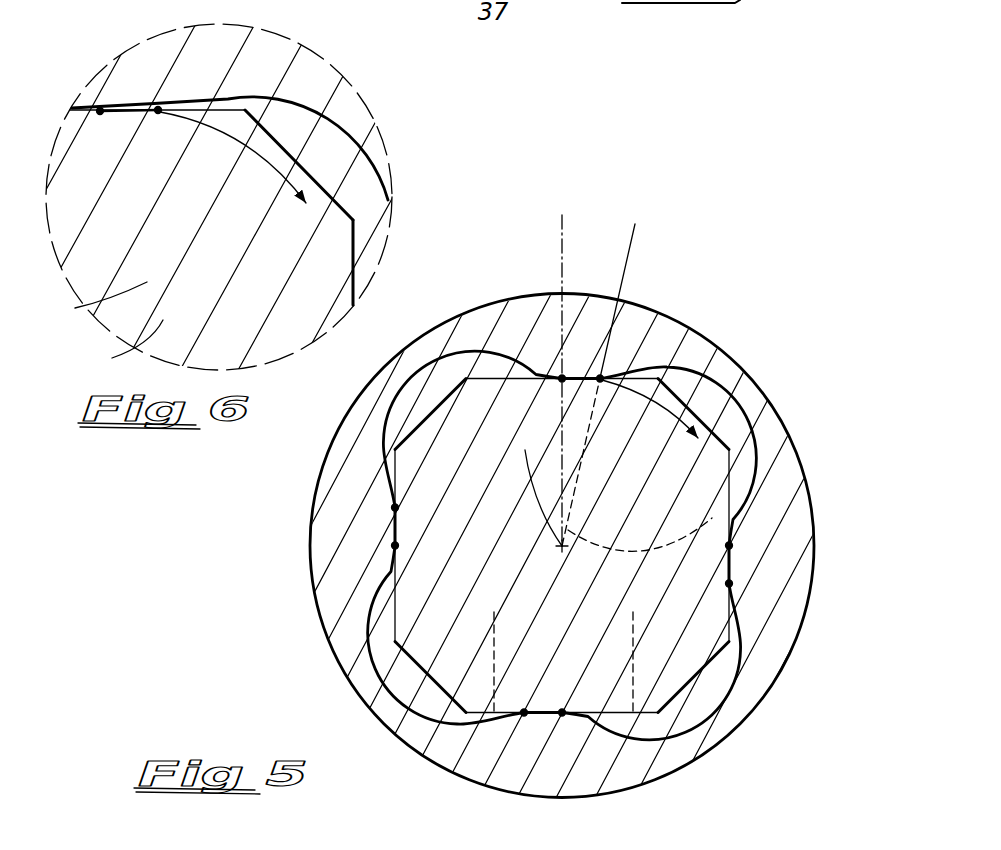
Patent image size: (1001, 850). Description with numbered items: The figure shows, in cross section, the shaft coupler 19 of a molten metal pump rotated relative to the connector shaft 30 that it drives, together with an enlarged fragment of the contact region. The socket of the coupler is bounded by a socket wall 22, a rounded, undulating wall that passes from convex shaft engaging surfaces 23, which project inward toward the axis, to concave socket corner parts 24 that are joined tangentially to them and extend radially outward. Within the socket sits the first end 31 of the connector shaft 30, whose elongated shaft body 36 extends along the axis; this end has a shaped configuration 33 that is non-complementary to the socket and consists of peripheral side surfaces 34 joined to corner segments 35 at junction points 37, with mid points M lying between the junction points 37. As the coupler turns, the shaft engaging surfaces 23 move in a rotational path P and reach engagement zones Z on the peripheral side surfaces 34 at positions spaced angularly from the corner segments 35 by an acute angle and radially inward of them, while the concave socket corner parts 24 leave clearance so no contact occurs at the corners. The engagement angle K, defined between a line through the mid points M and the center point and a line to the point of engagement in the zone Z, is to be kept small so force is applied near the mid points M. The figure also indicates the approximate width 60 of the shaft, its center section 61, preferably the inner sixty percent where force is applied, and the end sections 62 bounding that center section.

In FIG. 5, the shaft coupler 19 is at (630, 294).
In FIG. 5, the socket wall 22 is at (388, 465).
In FIG. 6, the shaft engaging surfaces 23 is at (78, 114).
In FIG. 5, the shaft engaging surfaces 23 is at (405, 570).
In FIG. 6, the socket corner parts 24 is at (325, 135).
In FIG. 5, the socket corner parts 24 is at (392, 448).
In FIG. 6, the connector shaft 30 is at (358, 243).
In FIG. 6, the first end 31 is at (76, 308).
In FIG. 5, the first end 31 is at (690, 652).
In FIG. 5, the shaped configuration 33 is at (733, 537).
In FIG. 5, the peripheral side surfaces 34 is at (486, 372).
In FIG. 6, the corner segments 35 is at (318, 182).
In FIG. 5, the corner segments 35 is at (432, 415).
In FIG. 6, the shaft body 36 is at (112, 358).
In FIG. 5, the shaft body 36 is at (430, 505).
In FIG. 6, the junction points 37 is at (254, 100).
In FIG. 5, the junction points 37 is at (463, 381).
In FIG. 5, the width 60 is at (401, 596).
In FIG. 5, the center section 61 is at (496, 667).
In FIG. 5, the end sections 62 is at (401, 627).
In FIG. 5, the engagement angle K is at (633, 226).
In FIG. 6, the mid points M is at (100, 114).
In FIG. 5, the mid points M is at (562, 376).
In FIG. 6, the rotational path P is at (262, 163).
In FIG. 5, the rotational path P is at (725, 378).
In FIG. 6, the engagement zones Z is at (158, 100).
In FIG. 5, the engagement zones Z is at (603, 375).